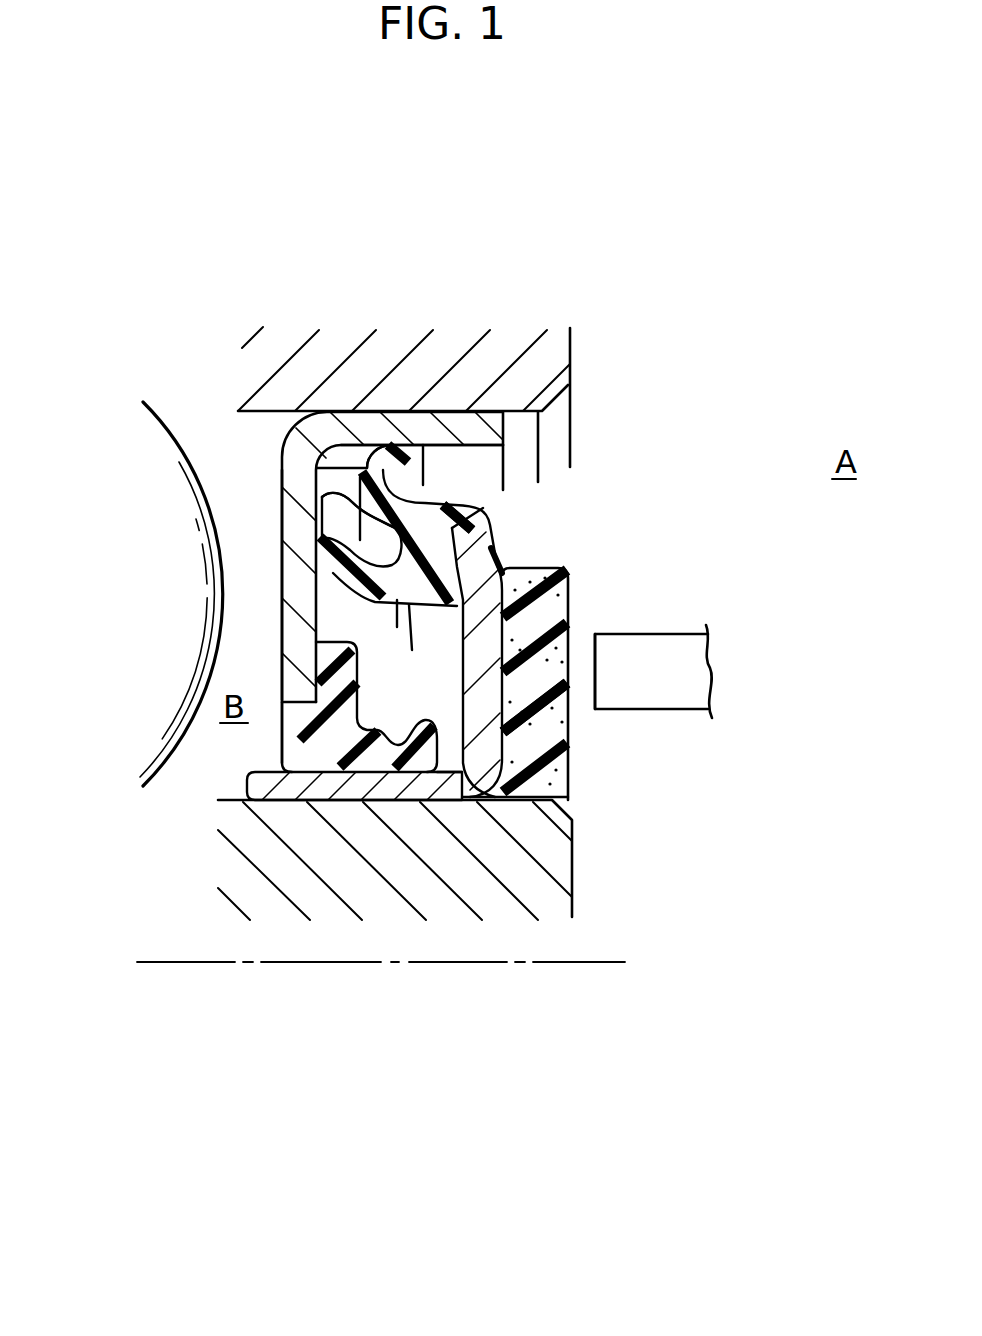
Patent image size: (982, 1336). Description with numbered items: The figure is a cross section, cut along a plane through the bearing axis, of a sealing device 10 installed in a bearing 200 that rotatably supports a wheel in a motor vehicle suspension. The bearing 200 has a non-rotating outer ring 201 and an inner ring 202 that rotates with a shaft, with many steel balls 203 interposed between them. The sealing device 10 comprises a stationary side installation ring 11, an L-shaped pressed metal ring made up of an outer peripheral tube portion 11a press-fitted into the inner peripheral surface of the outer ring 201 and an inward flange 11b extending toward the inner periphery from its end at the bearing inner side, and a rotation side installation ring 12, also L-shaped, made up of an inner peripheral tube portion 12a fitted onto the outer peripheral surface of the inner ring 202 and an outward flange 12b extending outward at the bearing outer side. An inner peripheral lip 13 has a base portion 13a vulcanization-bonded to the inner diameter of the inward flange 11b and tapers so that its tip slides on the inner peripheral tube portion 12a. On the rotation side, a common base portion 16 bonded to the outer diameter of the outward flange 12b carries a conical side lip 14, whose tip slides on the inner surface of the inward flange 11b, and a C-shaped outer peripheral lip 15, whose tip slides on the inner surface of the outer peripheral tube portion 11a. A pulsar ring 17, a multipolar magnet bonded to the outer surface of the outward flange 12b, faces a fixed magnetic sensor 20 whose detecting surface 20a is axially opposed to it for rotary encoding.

The sealing device 10 is at (556, 507).
The stationary side installation ring 11 is at (465, 411).
The outer peripheral tube portion 11a is at (427, 411).
The inward flange 11b is at (293, 633).
The rotation side installation ring 12 is at (450, 802).
The inner peripheral tube portion 12a is at (400, 790).
The outward flange 12b is at (478, 642).
The inner peripheral lip 13 is at (332, 800).
The base portion 13a is at (263, 782).
The side lip 14 is at (322, 524).
The outer peripheral lip 15 is at (362, 465).
The common base portion 16 is at (437, 573).
The pulsar ring 17 is at (550, 718).
The magnetic sensor 20 is at (680, 668).
The detecting surface 20a is at (593, 656).
The bearing 200 is at (270, 313).
The outer ring 201 is at (393, 347).
The inner ring 202 is at (385, 900).
The steel balls 203 is at (172, 755).